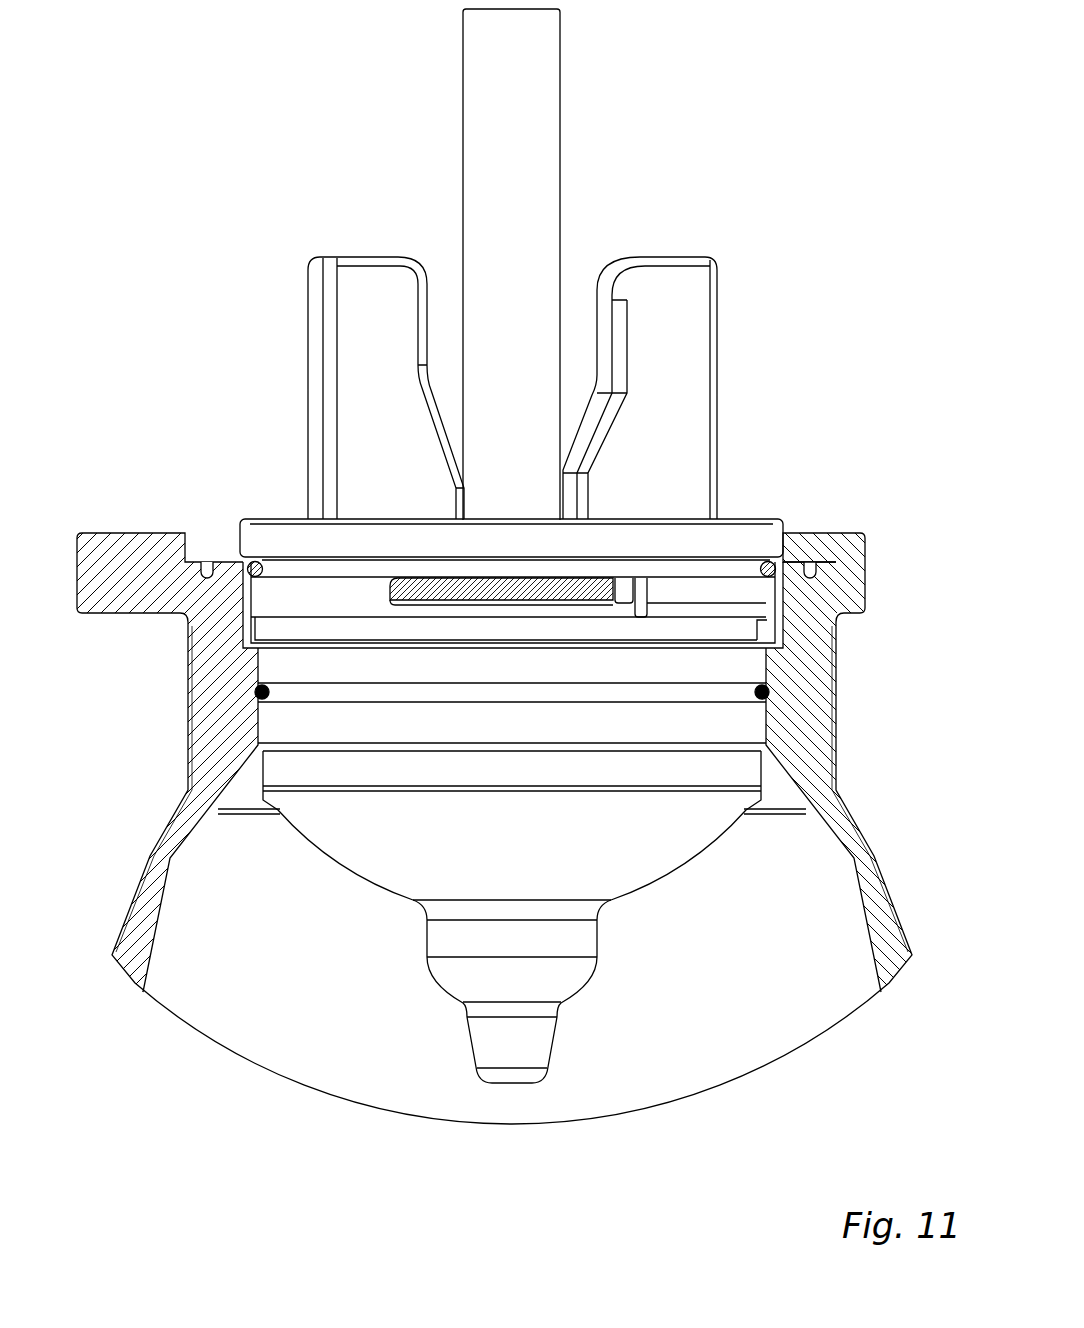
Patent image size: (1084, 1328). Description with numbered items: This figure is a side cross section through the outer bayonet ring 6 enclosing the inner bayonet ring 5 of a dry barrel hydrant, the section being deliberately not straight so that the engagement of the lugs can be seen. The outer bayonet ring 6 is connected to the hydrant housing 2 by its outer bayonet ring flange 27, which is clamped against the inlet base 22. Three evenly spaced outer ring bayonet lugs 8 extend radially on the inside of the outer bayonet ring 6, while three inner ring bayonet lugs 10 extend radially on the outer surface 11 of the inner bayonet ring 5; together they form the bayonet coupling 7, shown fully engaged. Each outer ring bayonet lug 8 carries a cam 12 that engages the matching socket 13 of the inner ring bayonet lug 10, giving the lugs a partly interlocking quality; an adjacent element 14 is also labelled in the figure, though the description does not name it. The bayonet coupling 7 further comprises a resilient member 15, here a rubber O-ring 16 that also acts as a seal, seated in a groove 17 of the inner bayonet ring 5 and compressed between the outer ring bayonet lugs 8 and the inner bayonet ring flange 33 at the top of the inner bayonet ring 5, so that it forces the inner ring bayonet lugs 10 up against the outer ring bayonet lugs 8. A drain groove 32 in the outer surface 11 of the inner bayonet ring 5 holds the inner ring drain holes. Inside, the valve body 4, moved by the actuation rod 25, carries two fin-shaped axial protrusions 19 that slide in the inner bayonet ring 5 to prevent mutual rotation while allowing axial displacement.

The hydrant housing 2 is at (140, 517).
The inlet base 22 is at (118, 557).
The valve body 4 is at (620, 840).
The inner bayonet ring 5 is at (541, 502).
The inner bayonet ring flange 33 is at (777, 570).
The outer bayonet ring 6 is at (173, 484).
The outer bayonet ring flange 27 is at (208, 565).
The bayonet coupling 7 is at (243, 650).
The outer ring bayonet lugs 8 is at (430, 578).
The inner ring bayonet lugs 10 is at (527, 610).
The outer surface 11 is at (287, 600).
The cam 12 is at (618, 600).
The socket 13 is at (646, 621).
The retaining element 14 is at (648, 596).
The resilient member 15 is at (844, 510).
The O-ring 16 is at (790, 566).
The groove 17 is at (300, 560).
The axial protrusions 19 is at (665, 322).
The actuation rod 25 is at (488, 162).
The drain groove 32 is at (670, 633).